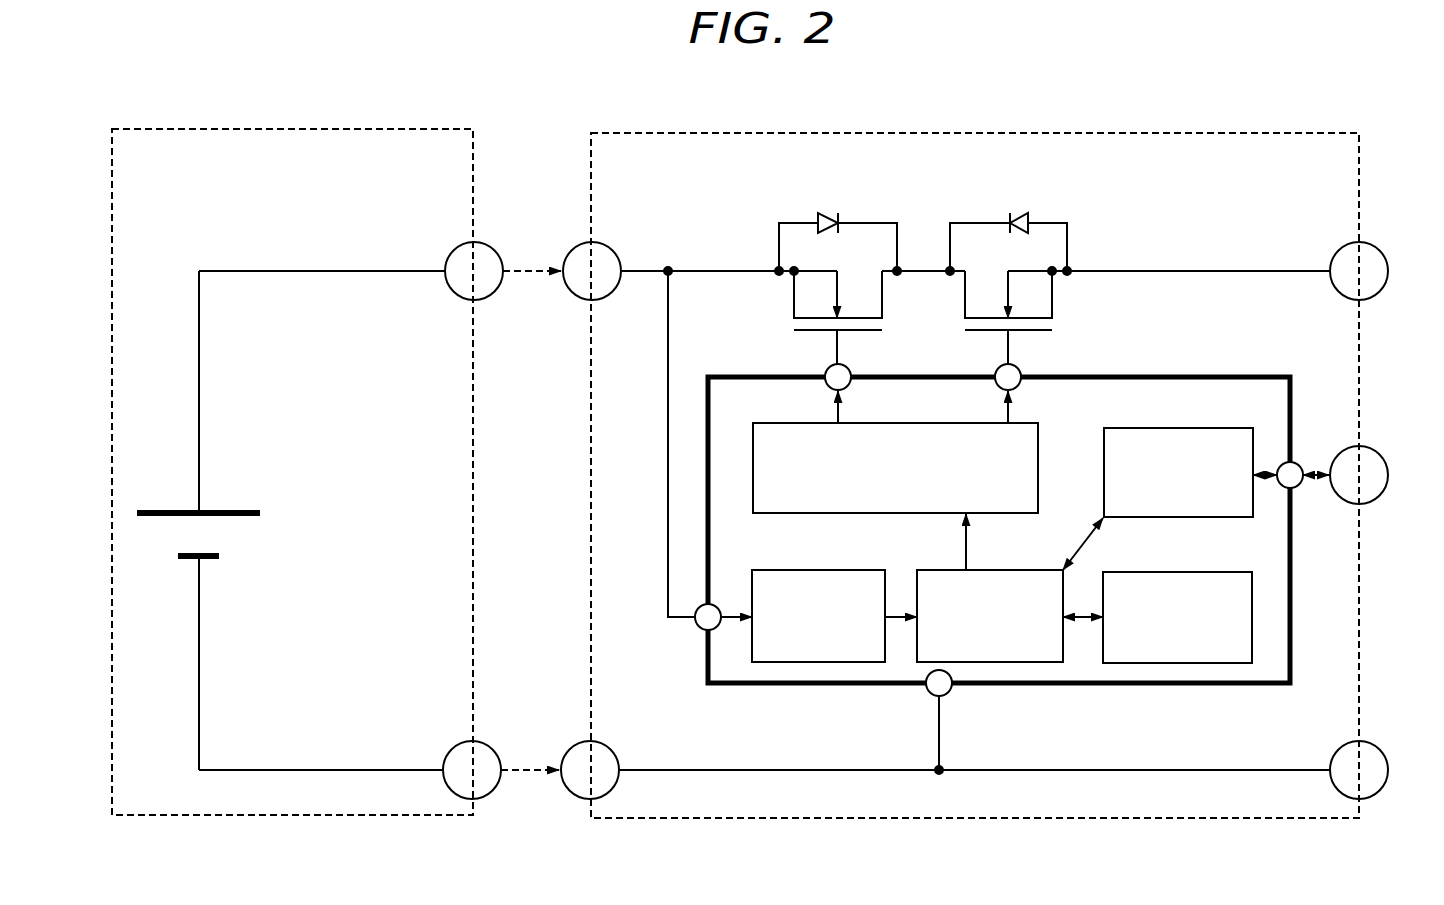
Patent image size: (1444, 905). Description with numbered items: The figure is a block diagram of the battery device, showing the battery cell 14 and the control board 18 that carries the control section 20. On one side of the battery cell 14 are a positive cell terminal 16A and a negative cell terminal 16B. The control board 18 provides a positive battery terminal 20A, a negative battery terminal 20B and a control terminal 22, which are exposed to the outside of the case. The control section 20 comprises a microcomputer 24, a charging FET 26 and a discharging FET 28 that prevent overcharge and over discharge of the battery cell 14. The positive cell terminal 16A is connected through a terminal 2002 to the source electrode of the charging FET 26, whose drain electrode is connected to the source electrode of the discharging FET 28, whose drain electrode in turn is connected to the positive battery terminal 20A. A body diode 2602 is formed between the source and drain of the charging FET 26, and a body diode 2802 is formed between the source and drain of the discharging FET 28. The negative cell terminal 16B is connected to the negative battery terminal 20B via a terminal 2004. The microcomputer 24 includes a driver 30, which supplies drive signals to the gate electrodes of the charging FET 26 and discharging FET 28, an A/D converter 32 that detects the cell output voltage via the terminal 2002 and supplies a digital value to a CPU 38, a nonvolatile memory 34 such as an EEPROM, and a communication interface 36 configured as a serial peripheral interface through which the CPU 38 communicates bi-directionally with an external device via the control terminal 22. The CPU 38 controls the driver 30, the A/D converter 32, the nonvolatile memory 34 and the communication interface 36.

The battery cell 14 is at (341, 118).
The positive cell terminal 16A is at (494, 250).
The negative cell terminal 16B is at (492, 749).
The control board 18 is at (1178, 122).
The terminal 2002 is at (612, 250).
The terminal 2004 is at (610, 749).
The control section 20 is at (1183, 752).
The positive battery terminal 20A is at (1379, 250).
The negative battery terminal 20B is at (1379, 749).
The control terminal 22 is at (1379, 453).
The microcomputer 24 is at (1170, 377).
The charging FET 26 is at (815, 225).
The discharging FET 28 is at (1038, 225).
The body diode 2602 is at (862, 222).
The body diode 2802 is at (992, 222).
The driver 30 is at (1038, 432).
The A/D converter 32 is at (823, 570).
The nonvolatile memory 34 is at (1190, 572).
The communication interface 36 is at (1197, 428).
The CPU 38 is at (1000, 570).